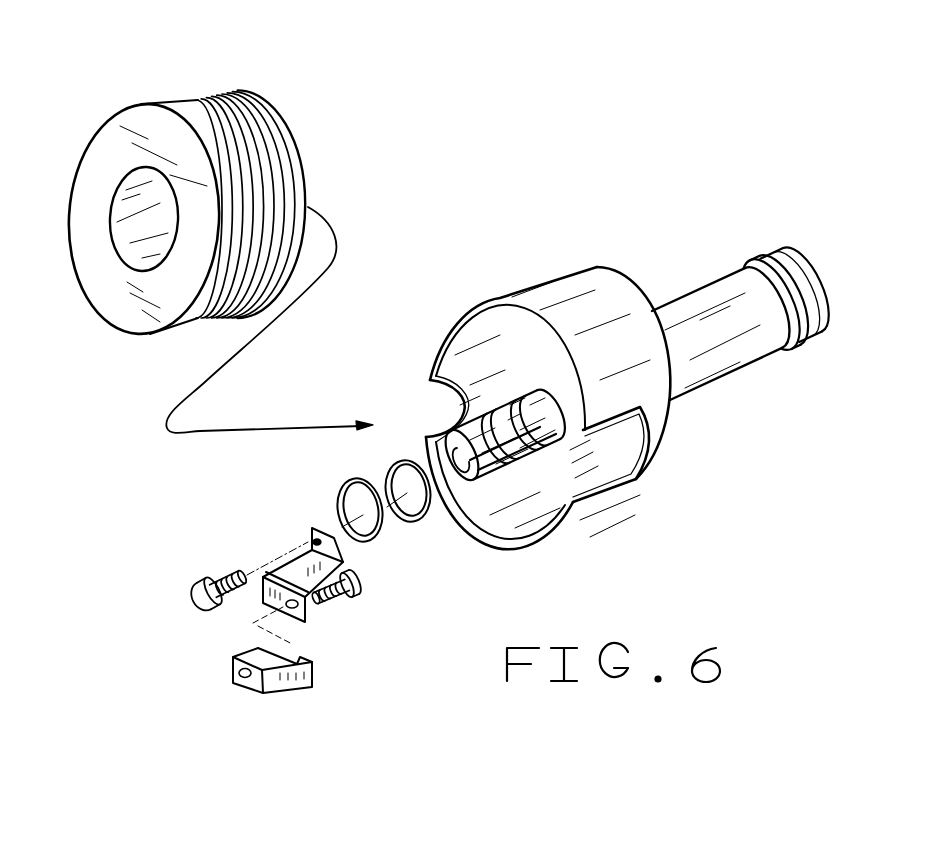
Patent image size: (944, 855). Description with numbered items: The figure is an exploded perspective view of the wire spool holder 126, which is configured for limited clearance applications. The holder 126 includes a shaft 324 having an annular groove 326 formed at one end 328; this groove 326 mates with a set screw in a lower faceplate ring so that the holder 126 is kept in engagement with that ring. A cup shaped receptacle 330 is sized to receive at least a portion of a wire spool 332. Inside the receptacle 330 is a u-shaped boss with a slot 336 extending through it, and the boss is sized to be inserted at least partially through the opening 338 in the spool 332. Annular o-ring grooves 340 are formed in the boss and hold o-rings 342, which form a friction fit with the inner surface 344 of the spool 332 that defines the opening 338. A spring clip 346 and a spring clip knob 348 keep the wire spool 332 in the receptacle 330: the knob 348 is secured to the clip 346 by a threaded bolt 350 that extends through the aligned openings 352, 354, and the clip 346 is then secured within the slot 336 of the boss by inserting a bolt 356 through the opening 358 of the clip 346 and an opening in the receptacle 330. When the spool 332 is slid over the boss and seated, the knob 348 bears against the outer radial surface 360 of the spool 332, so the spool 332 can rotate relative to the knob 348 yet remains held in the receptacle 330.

The wire spool holder 126 is at (558, 582).
The shaft 324 is at (730, 350).
The annular groove 326 is at (784, 290).
The end 328 is at (802, 268).
The cup shaped receptacle 330 is at (598, 293).
The wire spool 332 is at (113, 142).
The slot 336 is at (507, 458).
The opening 338 is at (150, 250).
The annular o-ring grooves 340 is at (530, 400).
The o-rings 342 is at (377, 533).
The inner surface 344 is at (126, 226).
The spring clip 346 is at (295, 577).
The spring clip knob 348 is at (293, 683).
The threaded bolt 350 is at (352, 586).
The opening 352 is at (305, 615).
The opening 354 is at (240, 685).
The bolt 356 is at (203, 583).
The opening 358 is at (312, 538).
The outer radial surface 360 is at (143, 102).